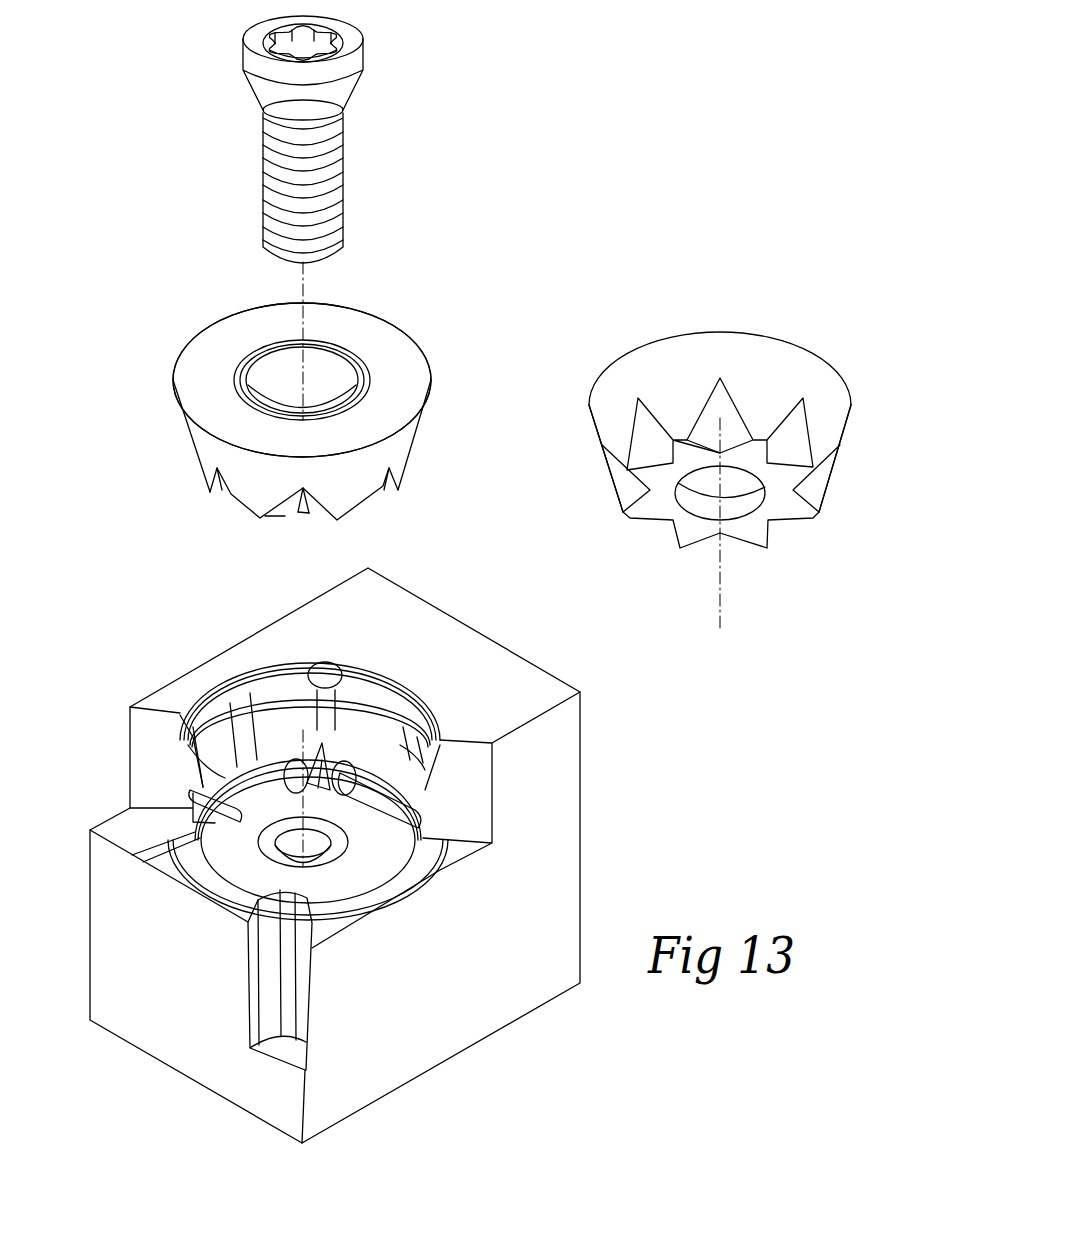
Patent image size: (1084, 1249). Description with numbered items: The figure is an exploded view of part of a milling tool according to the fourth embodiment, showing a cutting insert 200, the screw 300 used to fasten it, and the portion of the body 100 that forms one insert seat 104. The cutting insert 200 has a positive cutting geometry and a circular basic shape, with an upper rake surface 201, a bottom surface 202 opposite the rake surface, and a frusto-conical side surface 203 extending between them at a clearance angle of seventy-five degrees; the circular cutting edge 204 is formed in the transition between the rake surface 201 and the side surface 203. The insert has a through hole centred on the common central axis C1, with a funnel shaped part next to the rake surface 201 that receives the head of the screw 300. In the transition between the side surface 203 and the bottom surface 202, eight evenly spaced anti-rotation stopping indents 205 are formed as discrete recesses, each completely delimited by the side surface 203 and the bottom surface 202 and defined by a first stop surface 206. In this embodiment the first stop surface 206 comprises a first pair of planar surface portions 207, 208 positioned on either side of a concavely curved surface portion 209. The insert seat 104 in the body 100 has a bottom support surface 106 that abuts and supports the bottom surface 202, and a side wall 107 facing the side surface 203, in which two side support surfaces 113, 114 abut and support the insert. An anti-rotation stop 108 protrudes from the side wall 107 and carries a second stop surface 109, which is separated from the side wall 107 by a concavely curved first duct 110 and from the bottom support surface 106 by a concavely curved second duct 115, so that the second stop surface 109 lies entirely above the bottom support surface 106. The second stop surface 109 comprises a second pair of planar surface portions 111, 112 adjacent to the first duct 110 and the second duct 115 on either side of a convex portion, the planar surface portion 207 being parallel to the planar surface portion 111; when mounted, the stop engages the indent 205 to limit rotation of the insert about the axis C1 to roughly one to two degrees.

The screw 300 is at (378, 101).
The common central axis C1 is at (303, 284).
The cutting insert 200 is at (163, 360).
The upper rake surface 201 is at (378, 340).
The circular cutting edge 204 is at (430, 365).
The anti-rotation stopping indent 205 is at (385, 487).
The first planar surface portion 207 is at (315, 510).
The planar surface portion 208 is at (293, 508).
The concavely curved surface portion 209 is at (303, 503).
The first stop surface 206 is at (722, 430).
The frusto-conical side surface 203 is at (833, 417).
The bottom surface 202 is at (753, 533).
The body 100 is at (507, 1036).
The insert seat 104 is at (228, 860).
The bottom support surface 106 is at (348, 877).
The side wall 107 is at (383, 762).
The anti-rotation stop 108 is at (313, 780).
The second stop surface 109 is at (310, 780).
The first duct 110 is at (337, 747).
The second planar surface portion 111 is at (307, 778).
The second planar surface portion 112 is at (340, 767).
The side support surface 113 is at (213, 727).
The side support surface 114 is at (413, 746).
The second duct 115 is at (233, 797).